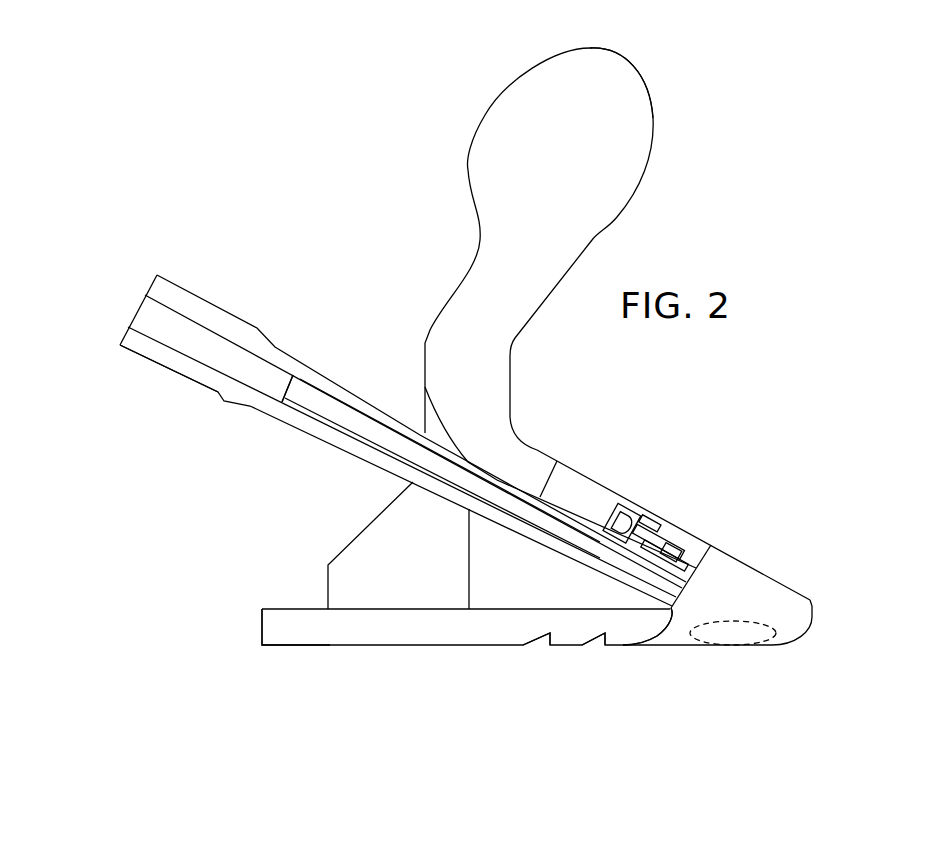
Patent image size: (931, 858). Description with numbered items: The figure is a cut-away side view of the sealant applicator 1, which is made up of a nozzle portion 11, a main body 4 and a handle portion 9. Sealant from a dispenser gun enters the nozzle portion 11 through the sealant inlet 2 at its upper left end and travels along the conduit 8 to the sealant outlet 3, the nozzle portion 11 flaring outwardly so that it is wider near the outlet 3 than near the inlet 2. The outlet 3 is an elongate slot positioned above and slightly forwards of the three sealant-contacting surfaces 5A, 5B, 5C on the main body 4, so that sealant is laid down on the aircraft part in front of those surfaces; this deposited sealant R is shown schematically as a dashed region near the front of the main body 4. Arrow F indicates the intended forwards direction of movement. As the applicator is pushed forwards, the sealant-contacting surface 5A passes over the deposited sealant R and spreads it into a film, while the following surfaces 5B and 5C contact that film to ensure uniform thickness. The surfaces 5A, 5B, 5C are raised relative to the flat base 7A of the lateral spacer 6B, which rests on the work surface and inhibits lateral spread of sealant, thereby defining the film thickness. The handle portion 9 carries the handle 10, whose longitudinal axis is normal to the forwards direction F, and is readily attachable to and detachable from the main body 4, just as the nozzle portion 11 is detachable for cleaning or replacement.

The sealant applicator 1 is at (322, 147).
The sealant inlet 2 is at (168, 318).
The sealant outlet 3 is at (690, 596).
The main body 4 is at (452, 676).
The sealant-contacting surface 5A is at (643, 647).
The sealant-contacting surface 5B is at (588, 647).
The sealant-contacting surface 5C is at (533, 645).
The lateral spacer 6B is at (302, 637).
The flat base 7A is at (386, 648).
The conduit 8 is at (337, 413).
The handle portion 9 is at (489, 69).
The handle 10 is at (518, 192).
The nozzle portion 11 is at (207, 389).
The deposited sealant R is at (737, 632).
The direction of movement F is at (618, 369).